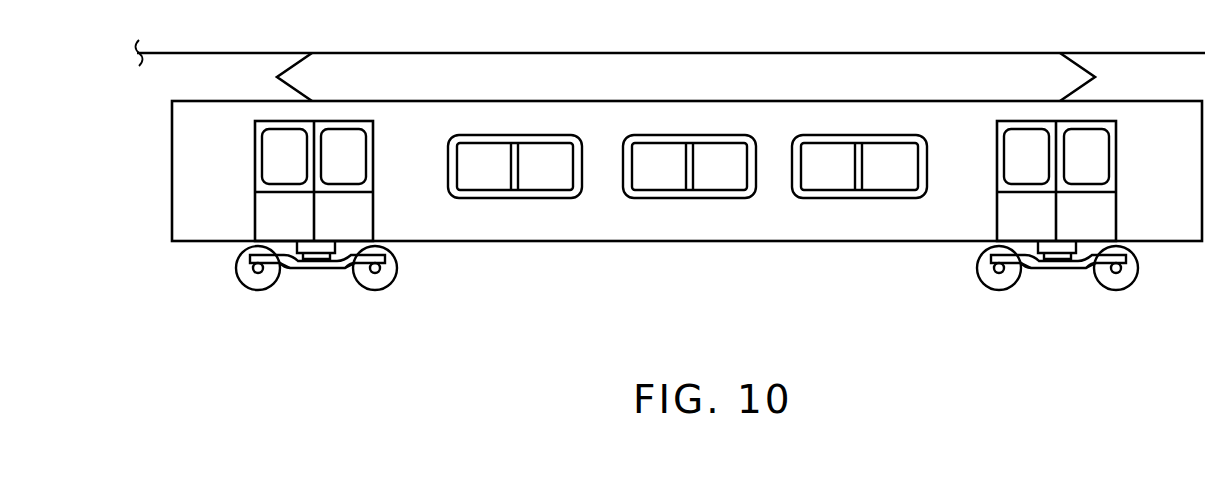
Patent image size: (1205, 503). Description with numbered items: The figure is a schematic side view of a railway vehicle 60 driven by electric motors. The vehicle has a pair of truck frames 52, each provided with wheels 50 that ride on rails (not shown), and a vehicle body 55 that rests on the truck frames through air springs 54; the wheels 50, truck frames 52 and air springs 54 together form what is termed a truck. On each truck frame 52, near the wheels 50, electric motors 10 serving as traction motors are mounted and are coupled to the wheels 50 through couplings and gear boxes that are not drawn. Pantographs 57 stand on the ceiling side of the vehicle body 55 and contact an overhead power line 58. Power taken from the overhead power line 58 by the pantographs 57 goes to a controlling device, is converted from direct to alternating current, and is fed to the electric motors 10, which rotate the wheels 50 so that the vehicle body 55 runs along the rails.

The electric motor 10 is at (352, 241).
The wheel 50 is at (237, 267).
The truck frame 52 is at (327, 266).
The air spring 54 is at (317, 247).
The vehicle body 55 is at (703, 231).
The pantograph 57 is at (291, 66).
The overhead power line 58 is at (713, 53).
The railway vehicle 60 is at (607, 253).